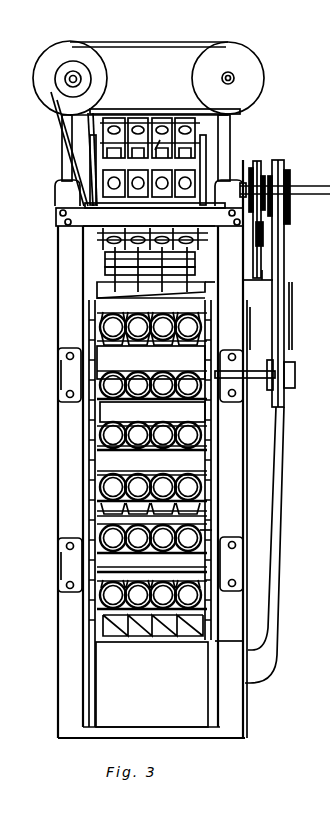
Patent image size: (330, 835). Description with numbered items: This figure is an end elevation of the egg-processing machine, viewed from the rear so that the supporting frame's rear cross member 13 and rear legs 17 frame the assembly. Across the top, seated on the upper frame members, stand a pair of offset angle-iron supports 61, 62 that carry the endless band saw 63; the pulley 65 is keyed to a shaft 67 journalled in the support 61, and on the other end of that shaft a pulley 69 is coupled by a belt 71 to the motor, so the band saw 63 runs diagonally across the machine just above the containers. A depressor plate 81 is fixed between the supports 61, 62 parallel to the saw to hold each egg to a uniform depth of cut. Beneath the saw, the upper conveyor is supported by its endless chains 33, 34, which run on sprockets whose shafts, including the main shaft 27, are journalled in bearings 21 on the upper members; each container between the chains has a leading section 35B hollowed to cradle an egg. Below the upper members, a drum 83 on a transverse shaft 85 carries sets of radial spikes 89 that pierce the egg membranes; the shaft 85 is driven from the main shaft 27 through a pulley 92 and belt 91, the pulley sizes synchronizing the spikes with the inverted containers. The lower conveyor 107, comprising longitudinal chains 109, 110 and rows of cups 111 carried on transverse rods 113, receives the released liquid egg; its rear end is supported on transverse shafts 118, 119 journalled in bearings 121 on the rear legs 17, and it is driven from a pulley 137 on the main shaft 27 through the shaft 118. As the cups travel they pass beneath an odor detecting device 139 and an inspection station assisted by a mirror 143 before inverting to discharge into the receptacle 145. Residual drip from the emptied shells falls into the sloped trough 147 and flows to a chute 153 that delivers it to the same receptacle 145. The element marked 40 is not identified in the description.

The endless band saw 63 is at (153, 42).
The pulley 65 is at (50, 66).
The pulley 69 is at (85, 70).
The shaft 67 is at (80, 79).
The belt 71 is at (56, 100).
The support 61 is at (68, 126).
The support 62 is at (232, 125).
The bearings 21 is at (63, 191).
The depressor plate 81 is at (152, 110).
The endless chain 34 is at (206, 143).
The leading section 35B is at (167, 154).
The rear cross member 13 is at (58, 218).
The endless chain 33 is at (82, 218).
The rear legs 17 is at (64, 297).
The shaft 85 is at (90, 262).
The drum 83 is at (105, 268).
The trough 147 is at (105, 288).
The radial spikes 89 is at (195, 284).
The longitudinal chain 109 is at (93, 455).
The longitudinal chain 110 is at (209, 457).
The cups 111 is at (134, 482).
The transverse rods 113 is at (150, 350).
The transverse shaft 118 is at (183, 369).
The odor detecting device 139 is at (108, 404).
The lower conveyor 107 is at (72, 444).
The bearings 121 is at (62, 362).
The mirror 143 is at (215, 453).
The pulley 92 is at (250, 172).
The belt 91 is at (259, 163).
The pulley 137 is at (285, 179).
The main shaft 27 is at (285, 184).
The bracket 40 is at (257, 284).
The chute 153 is at (283, 456).
The transverse shaft 119 is at (207, 537).
The receptacle 145 is at (103, 689).